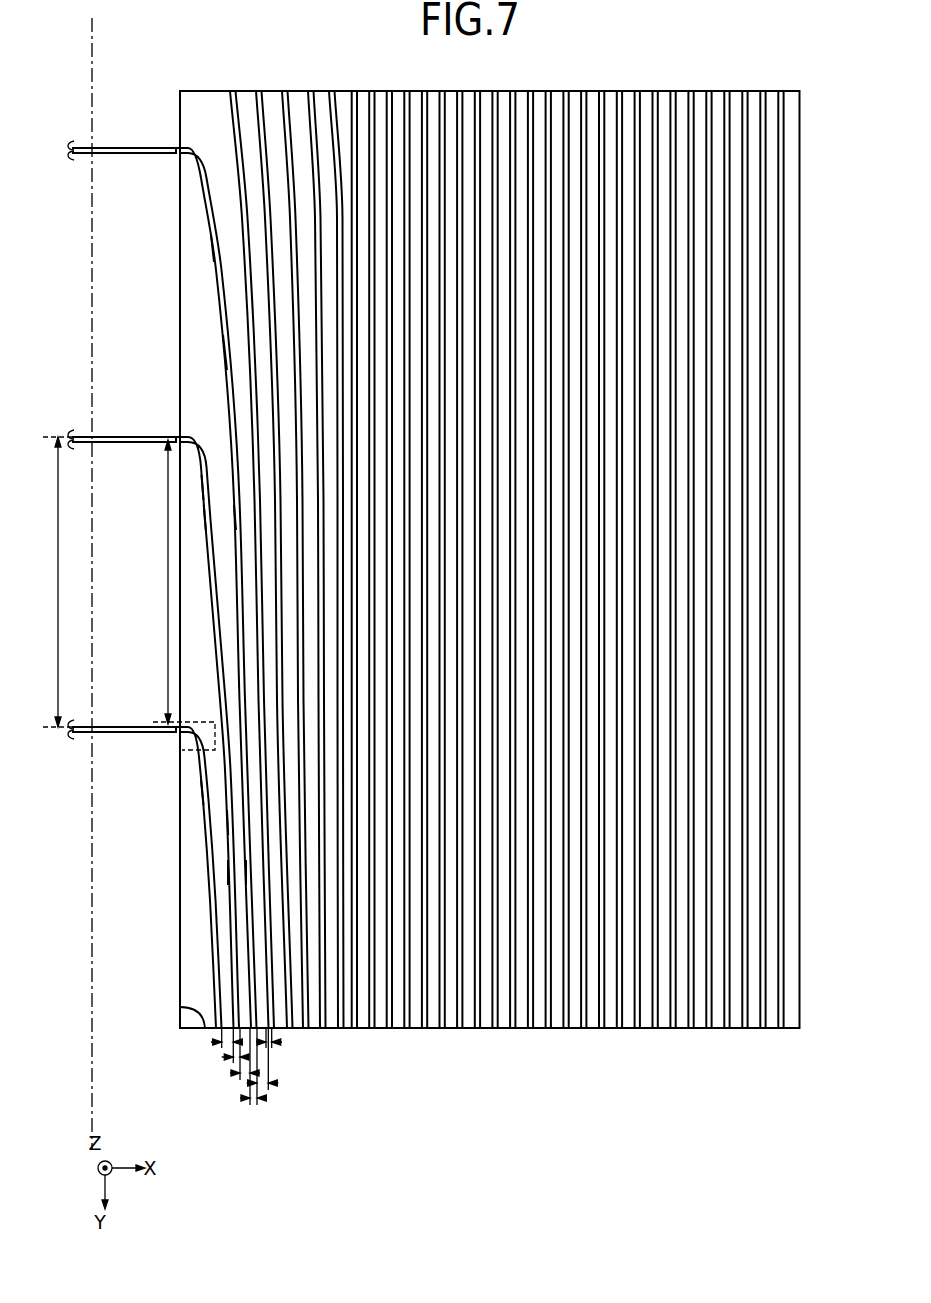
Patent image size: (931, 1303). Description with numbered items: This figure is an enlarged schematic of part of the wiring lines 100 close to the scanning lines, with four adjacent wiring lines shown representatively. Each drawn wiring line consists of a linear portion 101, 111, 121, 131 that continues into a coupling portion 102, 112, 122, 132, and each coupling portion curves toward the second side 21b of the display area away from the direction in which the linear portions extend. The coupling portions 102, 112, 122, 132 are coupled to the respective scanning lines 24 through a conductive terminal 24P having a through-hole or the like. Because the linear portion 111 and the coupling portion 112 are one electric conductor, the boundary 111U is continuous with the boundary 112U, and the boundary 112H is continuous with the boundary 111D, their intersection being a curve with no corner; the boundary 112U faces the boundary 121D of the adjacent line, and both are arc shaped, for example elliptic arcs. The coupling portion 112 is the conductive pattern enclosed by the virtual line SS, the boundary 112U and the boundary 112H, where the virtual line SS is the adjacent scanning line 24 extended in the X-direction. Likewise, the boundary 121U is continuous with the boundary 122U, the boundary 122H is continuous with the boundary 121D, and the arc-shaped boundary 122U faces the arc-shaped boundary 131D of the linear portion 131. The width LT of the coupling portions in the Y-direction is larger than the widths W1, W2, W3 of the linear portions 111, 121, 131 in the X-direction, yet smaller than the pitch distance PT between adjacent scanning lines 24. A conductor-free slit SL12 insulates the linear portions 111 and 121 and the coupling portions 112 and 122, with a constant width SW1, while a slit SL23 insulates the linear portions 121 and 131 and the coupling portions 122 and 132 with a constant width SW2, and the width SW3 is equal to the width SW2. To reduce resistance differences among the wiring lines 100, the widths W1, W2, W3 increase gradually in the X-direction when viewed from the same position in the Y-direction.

The wiring lines 100 is at (806, 418).
The coupling portion 132 is at (205, 104).
The second side of the display area 21b is at (93, 33).
The scanning line 24 is at (117, 146).
The conductive terminal 24P is at (178, 142).
The linear portion 131 is at (180, 1007).
The linear portion 121 is at (240, 992).
The linear portion 111 is at (227, 966).
The linear portion 101 is at (201, 1032).
The coupling portion 122 is at (195, 290).
The coupling portion 112 is at (195, 604).
The coupling portion 102 is at (196, 827).
The boundary of the coupling portion 122 122H is at (176, 320).
The boundary of the coupling portion 112 112H is at (176, 640).
The boundary of the coupling portion 122 122U is at (223, 252).
The boundary of the linear portion 131 131D is at (216, 353).
The boundary of the coupling portion 112 112U is at (213, 483).
The boundary of the linear portion 121 121D is at (207, 523).
The boundary of the linear portion 121 121U is at (240, 526).
The boundary of the linear portion 111 111D is at (203, 796).
The boundary of the linear portion 111 111U is at (234, 830).
The slit SL12 is at (232, 880).
The slit SL23 is at (250, 881).
The virtual line SS is at (177, 753).
The pitch distance PT is at (50, 582).
The width of the coupling portions LT is at (156, 582).
The width of the linear portion 111 W1 is at (222, 1045).
The width of the linear portion 121 W2 is at (240, 1075).
The width of the linear portion 131 W3 is at (268, 1085).
The width of the slit SL12 SW1 is at (232, 1060).
The width of the slit SL23 SW2 is at (248, 1100).
The slit width SW3 is at (272, 1047).